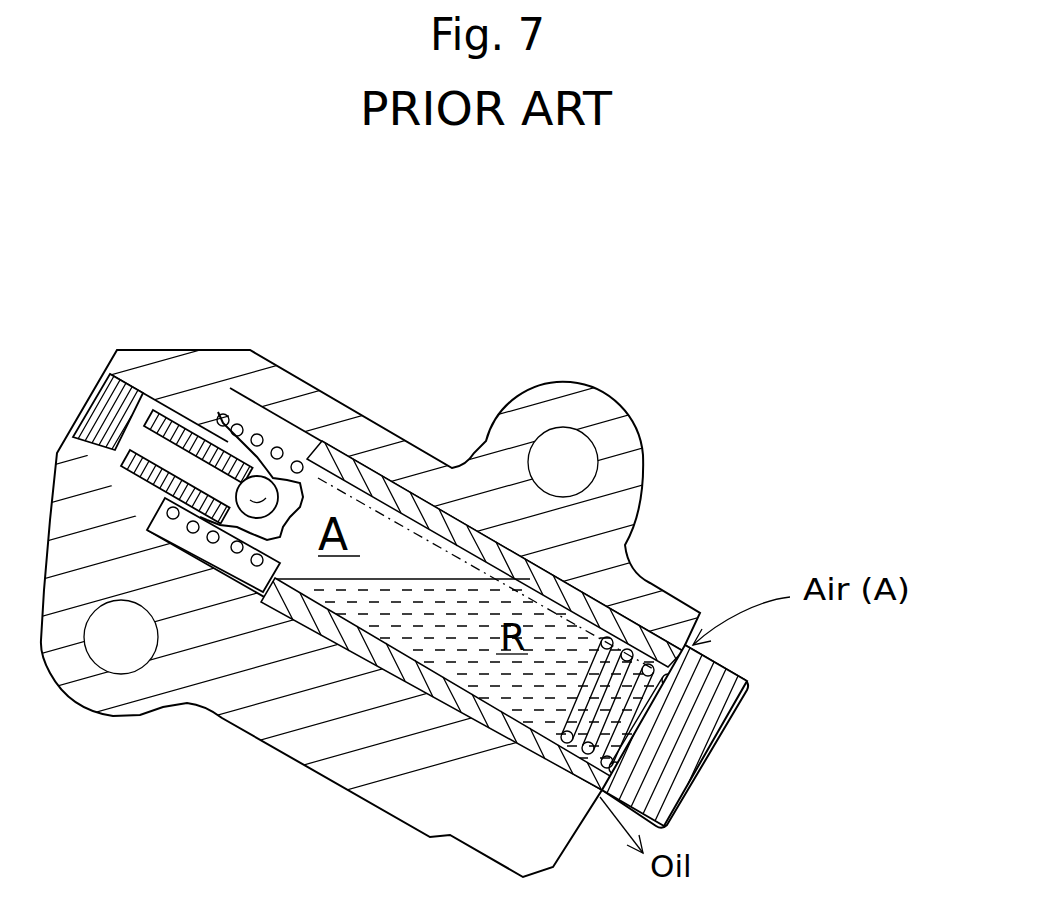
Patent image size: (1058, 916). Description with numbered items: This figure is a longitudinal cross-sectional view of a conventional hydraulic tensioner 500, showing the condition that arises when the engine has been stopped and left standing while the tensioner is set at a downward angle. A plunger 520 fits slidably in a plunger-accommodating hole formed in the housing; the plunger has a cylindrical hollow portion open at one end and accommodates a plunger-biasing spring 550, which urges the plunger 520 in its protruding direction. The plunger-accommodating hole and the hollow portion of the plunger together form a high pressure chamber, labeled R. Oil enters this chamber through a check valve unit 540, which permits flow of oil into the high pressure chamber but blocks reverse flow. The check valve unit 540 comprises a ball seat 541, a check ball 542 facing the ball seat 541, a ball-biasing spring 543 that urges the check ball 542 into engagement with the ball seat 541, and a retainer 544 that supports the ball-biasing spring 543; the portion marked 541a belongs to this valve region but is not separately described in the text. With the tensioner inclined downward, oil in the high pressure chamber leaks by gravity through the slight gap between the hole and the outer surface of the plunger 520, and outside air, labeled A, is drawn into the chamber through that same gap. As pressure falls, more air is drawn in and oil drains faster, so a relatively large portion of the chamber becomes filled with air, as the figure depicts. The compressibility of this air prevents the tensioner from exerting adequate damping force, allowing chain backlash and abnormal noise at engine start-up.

The hydraulic tensioner 500 is at (672, 388).
The plunger 520 is at (670, 770).
The check valve unit 540 is at (320, 395).
The valve hole 541a is at (158, 437).
The ball seat 541 is at (200, 417).
The check ball 542 is at (298, 440).
The ball-biasing spring 543 is at (343, 386).
The retainer 544 is at (352, 458).
The plunger-biasing spring 550 is at (637, 697).